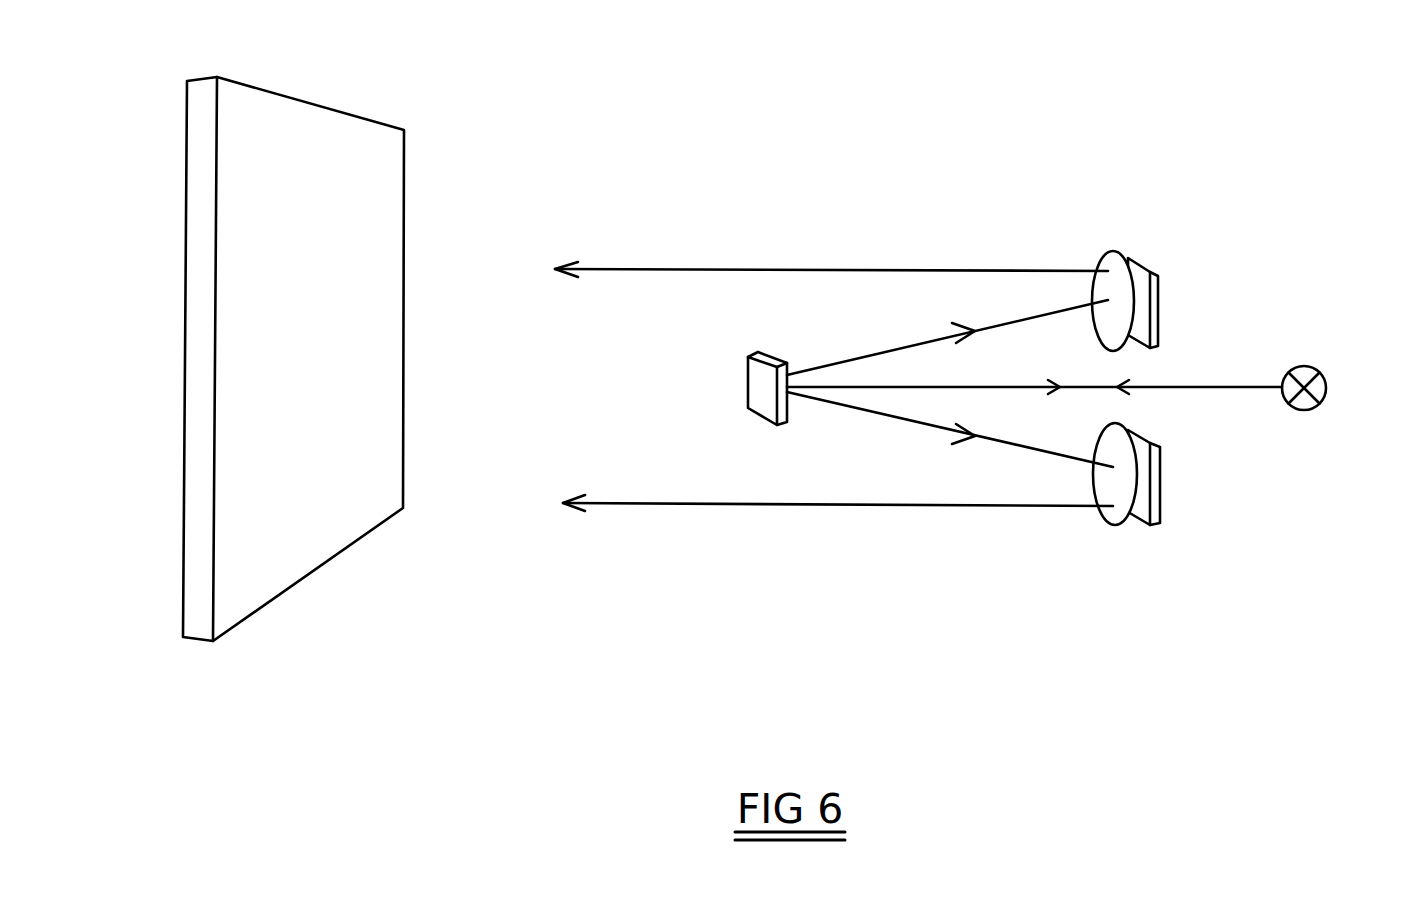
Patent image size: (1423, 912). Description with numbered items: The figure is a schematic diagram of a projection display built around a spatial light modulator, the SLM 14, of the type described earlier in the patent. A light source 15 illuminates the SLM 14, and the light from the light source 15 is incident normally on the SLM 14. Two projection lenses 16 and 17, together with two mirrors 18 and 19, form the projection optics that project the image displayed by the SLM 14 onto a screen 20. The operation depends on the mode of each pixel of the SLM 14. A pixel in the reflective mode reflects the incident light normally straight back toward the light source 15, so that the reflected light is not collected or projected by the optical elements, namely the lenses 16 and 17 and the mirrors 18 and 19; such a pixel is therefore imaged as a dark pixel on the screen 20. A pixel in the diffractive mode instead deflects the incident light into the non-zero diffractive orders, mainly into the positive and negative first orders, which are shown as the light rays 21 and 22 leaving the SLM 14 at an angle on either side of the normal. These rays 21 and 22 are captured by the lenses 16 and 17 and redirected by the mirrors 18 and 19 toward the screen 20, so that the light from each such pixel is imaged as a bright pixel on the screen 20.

The SLM 14 is at (763, 395).
The light source 15 is at (1302, 372).
The projection lens 16 is at (1112, 263).
The projection lens 17 is at (1117, 513).
The mirror 18 is at (1153, 292).
The mirror 19 is at (1162, 498).
The screen 20 is at (378, 155).
The light ray 21 is at (900, 347).
The light ray 22 is at (905, 422).